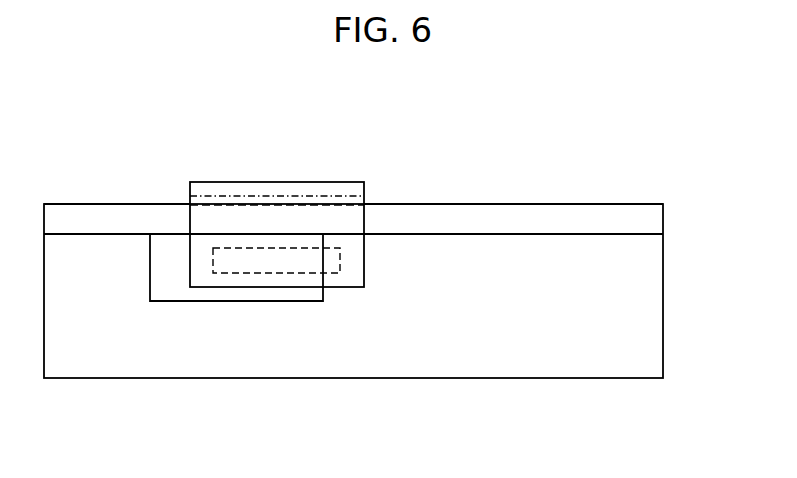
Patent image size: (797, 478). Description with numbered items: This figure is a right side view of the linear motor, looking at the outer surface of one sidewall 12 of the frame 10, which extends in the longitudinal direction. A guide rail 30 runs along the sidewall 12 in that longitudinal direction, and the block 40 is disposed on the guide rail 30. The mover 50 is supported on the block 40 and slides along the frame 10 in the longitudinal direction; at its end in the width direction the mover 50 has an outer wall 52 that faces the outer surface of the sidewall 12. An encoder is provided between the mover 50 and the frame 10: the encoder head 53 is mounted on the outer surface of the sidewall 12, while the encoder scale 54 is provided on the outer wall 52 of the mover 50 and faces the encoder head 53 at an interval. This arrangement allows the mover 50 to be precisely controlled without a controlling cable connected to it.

The frame 10 is at (650, 297).
The sidewall 12 is at (397, 291).
The guide rail 30 is at (58, 218).
The block 40 is at (190, 203).
The mover 50 is at (366, 220).
The outer wall 52 is at (337, 189).
The encoder head 53 is at (167, 288).
The encoder scale 54 is at (340, 262).